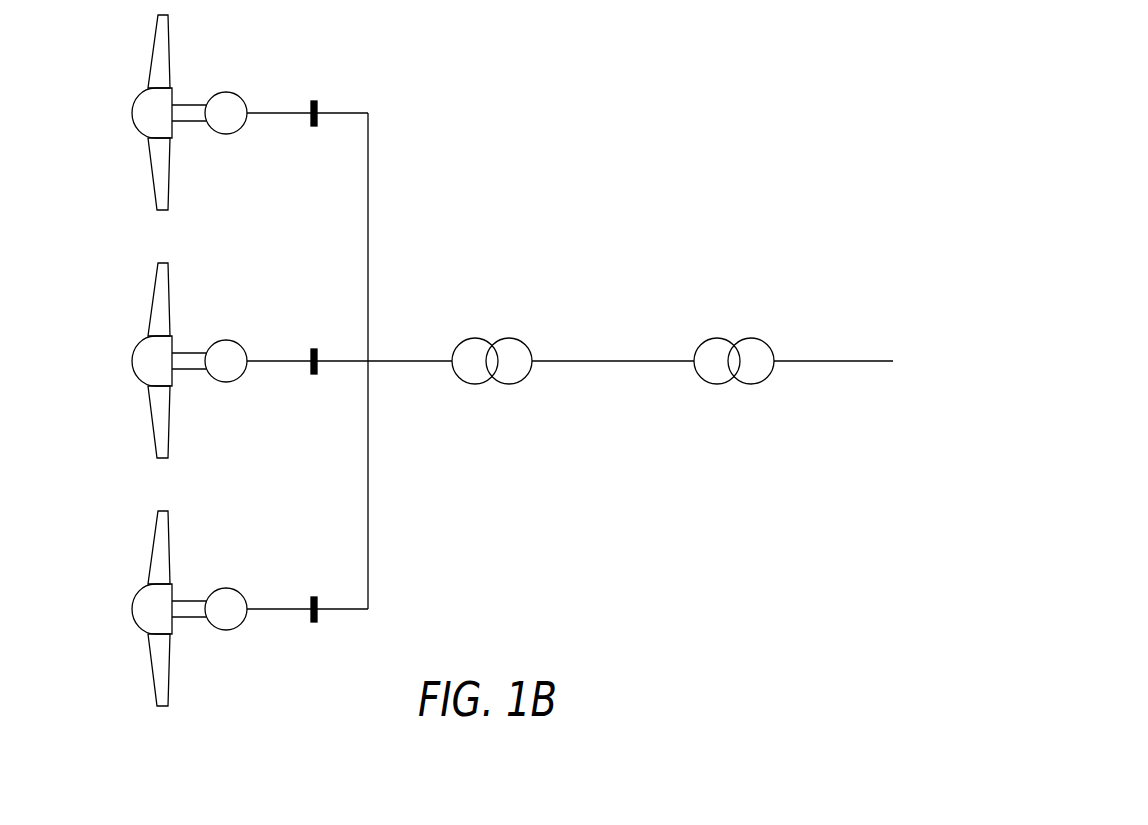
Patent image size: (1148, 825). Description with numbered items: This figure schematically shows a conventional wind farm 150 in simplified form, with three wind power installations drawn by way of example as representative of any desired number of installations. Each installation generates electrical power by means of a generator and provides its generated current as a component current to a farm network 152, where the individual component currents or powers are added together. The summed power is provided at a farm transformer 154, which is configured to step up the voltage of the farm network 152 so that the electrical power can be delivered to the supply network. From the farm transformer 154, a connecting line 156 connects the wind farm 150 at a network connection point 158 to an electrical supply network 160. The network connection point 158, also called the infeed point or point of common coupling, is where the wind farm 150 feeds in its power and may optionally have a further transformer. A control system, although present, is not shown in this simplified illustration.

The wind farm 150 is at (805, 185).
The farm network 152 is at (408, 323).
The farm transformer 154 is at (509, 338).
The connecting line 156 is at (592, 361).
The network connection point 158 is at (749, 323).
The electrical supply network 160 is at (843, 335).